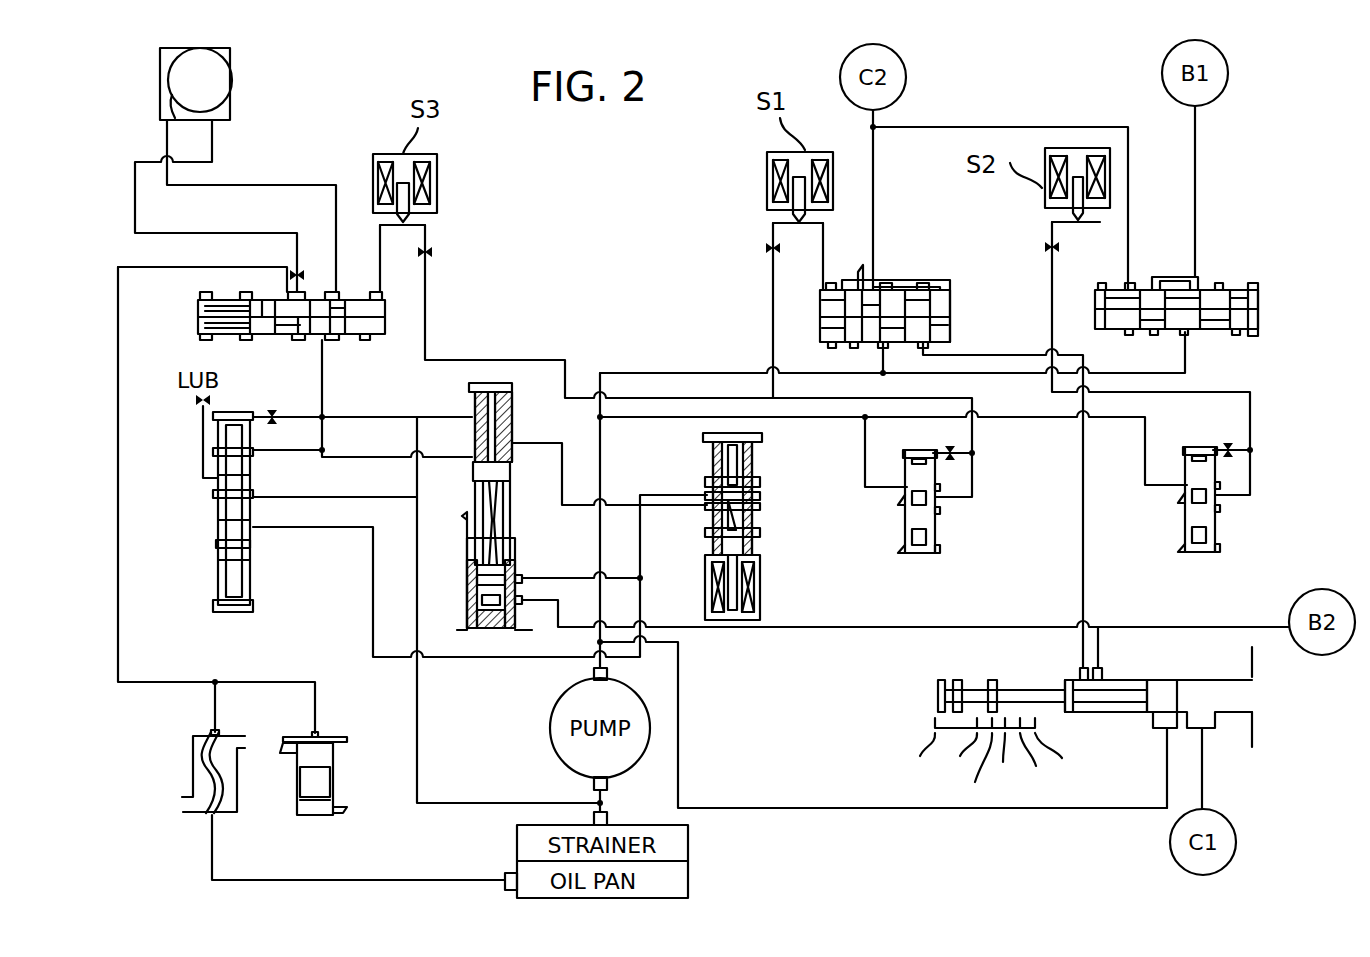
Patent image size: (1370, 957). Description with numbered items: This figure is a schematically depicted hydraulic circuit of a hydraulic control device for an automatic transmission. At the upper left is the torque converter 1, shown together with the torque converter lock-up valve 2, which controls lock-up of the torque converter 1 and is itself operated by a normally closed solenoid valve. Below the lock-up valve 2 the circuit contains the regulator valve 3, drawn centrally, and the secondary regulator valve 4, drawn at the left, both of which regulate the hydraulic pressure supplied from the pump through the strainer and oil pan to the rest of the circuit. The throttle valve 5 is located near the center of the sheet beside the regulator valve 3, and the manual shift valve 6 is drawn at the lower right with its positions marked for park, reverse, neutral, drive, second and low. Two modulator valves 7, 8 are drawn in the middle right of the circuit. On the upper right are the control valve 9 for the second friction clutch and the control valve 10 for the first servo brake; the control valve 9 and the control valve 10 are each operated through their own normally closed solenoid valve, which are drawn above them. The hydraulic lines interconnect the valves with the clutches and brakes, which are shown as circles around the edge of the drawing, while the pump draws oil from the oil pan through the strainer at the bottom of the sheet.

The torque converter 1 is at (233, 78).
The torque converter lock-up valve 2 is at (195, 320).
The regulator valve 3 is at (512, 520).
The secondary regulator valve 4 is at (217, 512).
The throttle valve 5 is at (752, 515).
The manual shift valve 6 is at (1163, 673).
The modulator valve 7 is at (935, 527).
The modulator valve 8 is at (1187, 527).
The control valve for friction clutch C2 9 is at (952, 293).
The control valve for servo brake B1 10 is at (1260, 300).